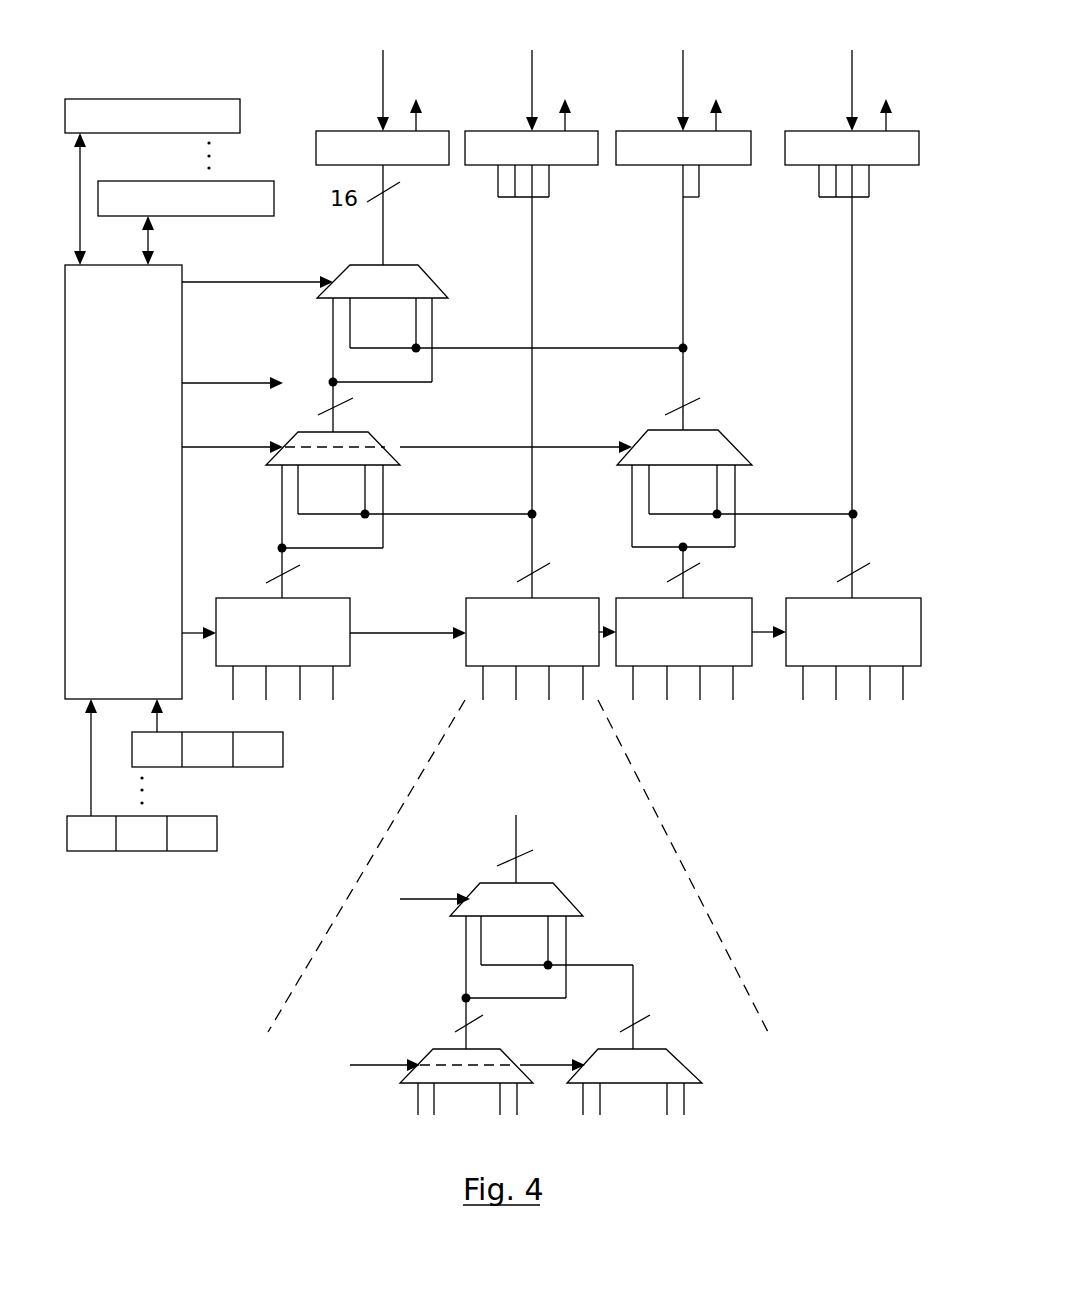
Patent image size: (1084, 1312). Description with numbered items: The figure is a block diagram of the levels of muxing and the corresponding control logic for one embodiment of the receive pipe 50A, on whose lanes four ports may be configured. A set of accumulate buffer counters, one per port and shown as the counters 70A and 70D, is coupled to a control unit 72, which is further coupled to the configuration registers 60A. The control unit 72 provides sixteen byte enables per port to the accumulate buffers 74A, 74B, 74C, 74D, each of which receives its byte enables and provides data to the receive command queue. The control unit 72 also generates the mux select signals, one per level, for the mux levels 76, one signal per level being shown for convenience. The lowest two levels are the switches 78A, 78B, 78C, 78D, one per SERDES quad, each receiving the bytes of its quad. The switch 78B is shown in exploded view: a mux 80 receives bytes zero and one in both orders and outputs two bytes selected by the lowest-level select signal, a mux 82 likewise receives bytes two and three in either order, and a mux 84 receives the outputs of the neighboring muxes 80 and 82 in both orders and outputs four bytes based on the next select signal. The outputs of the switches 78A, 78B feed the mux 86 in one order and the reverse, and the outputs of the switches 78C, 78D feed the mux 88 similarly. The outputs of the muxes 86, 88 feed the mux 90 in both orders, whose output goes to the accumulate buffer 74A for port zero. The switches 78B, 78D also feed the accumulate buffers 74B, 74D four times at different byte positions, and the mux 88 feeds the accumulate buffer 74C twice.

The receive pipe 50A is at (166, 1161).
The configuration registers 60A is at (203, 878).
The accumulate buffer counter 70A is at (152, 151).
The accumulate buffer counter 70D is at (186, 202).
The control unit 72 is at (110, 510).
The accumulate buffer 74A is at (389, 92).
The accumulate buffer 74B is at (542, 123).
The accumulate buffer 74C is at (706, 123).
The accumulate buffer 74D is at (836, 123).
The mux levels 76 is at (817, 762).
The switch 78A is at (337, 662).
The switch 78B is at (587, 662).
The switch 78C is at (738, 662).
The switch 78D is at (907, 662).
The mux 80 is at (434, 1080).
The mux 82 is at (620, 1077).
The mux 84 is at (503, 913).
The mux 86 is at (449, 498).
The mux 88 is at (670, 461).
The mux 90 is at (370, 295).